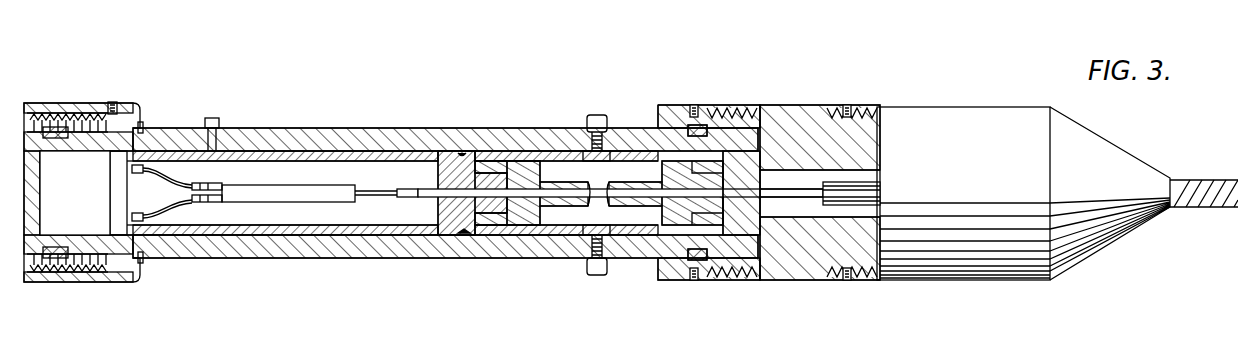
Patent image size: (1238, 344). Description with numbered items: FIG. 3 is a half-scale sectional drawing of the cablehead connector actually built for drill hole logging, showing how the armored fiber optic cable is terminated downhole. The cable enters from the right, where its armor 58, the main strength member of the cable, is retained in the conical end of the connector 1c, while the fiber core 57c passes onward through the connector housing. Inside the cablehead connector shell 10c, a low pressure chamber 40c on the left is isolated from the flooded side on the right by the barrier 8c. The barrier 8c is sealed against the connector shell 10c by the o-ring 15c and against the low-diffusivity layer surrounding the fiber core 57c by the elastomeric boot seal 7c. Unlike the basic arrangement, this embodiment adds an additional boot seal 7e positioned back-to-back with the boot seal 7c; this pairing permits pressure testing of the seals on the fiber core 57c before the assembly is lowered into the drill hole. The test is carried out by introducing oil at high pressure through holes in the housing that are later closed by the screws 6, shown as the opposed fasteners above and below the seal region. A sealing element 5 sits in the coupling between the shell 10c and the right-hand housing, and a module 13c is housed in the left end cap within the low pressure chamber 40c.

The connector 1c is at (992, 124).
The O-ring seal 5 is at (700, 125).
The screws 6 is at (598, 276).
The boot seal 7c is at (530, 163).
The additional boot seal 7e is at (648, 232).
The barrier 8c is at (468, 148).
The cablehead connector shell 10c is at (388, 124).
The electronics module 13c is at (78, 160).
The o-ring 15c is at (466, 240).
The low pressure chamber 40c is at (388, 215).
The fiber core 57c is at (795, 200).
The armor 58 is at (1190, 183).